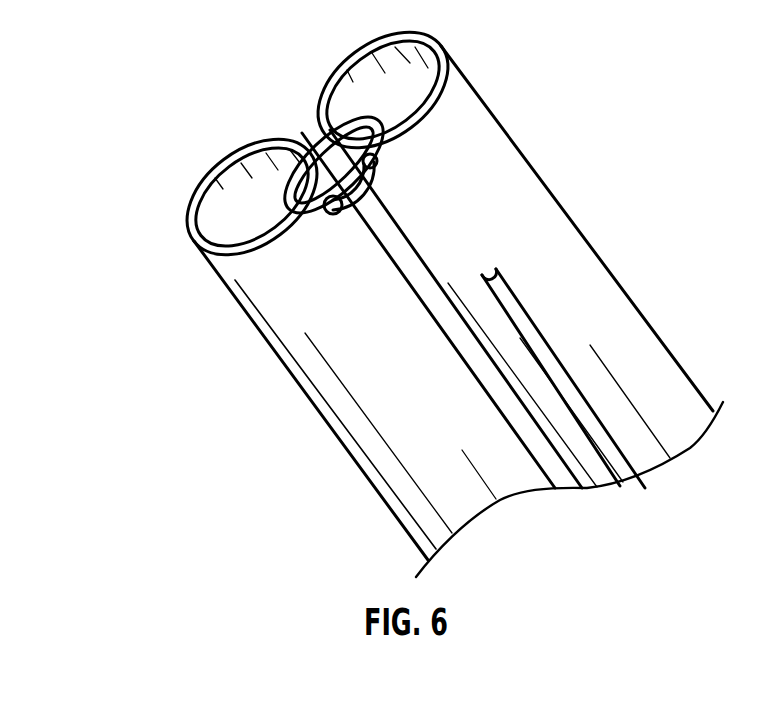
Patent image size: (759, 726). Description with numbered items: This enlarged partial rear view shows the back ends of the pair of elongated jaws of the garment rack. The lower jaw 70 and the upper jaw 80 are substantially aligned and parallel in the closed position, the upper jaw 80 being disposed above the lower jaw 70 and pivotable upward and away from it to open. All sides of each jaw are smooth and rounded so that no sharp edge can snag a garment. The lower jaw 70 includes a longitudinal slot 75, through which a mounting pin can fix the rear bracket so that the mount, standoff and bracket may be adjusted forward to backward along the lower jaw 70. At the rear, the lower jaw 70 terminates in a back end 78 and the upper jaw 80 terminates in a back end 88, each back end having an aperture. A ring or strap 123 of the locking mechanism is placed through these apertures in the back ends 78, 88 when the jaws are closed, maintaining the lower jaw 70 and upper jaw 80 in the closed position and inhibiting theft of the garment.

The lower jaw 70 is at (520, 146).
The longitudinal slot 75 is at (527, 308).
The back end 78 is at (340, 70).
The upper jaw 80 is at (262, 336).
The back end 88 is at (194, 204).
The ring or strap 123 is at (306, 130).